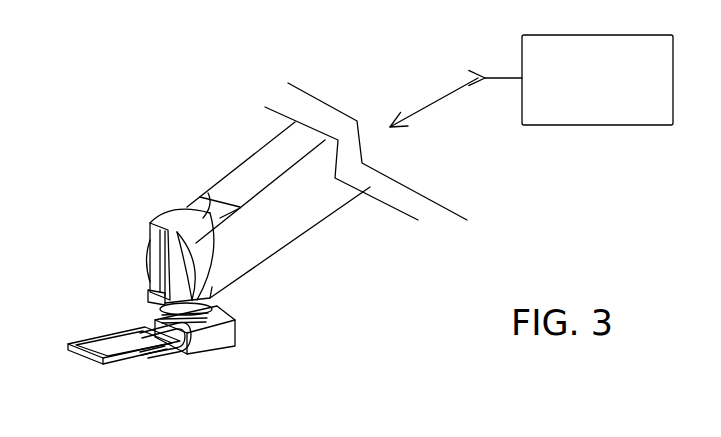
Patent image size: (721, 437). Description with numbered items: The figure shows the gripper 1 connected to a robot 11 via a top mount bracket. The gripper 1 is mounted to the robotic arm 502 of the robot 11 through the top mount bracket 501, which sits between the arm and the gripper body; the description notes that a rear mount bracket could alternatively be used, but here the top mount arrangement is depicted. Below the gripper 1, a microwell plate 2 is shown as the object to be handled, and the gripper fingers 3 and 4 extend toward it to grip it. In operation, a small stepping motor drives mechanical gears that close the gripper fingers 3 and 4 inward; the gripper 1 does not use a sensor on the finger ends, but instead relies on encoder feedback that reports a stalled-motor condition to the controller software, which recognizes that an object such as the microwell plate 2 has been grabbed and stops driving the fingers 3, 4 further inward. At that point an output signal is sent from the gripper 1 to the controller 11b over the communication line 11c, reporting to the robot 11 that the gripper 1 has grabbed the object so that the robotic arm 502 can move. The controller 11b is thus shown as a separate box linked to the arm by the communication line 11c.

The robot 11 is at (210, 133).
The gripper 1 is at (167, 212).
The microwell plate 2 is at (70, 342).
The gripper finger 3 is at (103, 328).
The gripper finger 4 is at (147, 357).
The top mount bracket 501 is at (235, 342).
The robotic arm 502 is at (293, 242).
The controller 11b is at (577, 126).
The communication line 11c is at (428, 97).